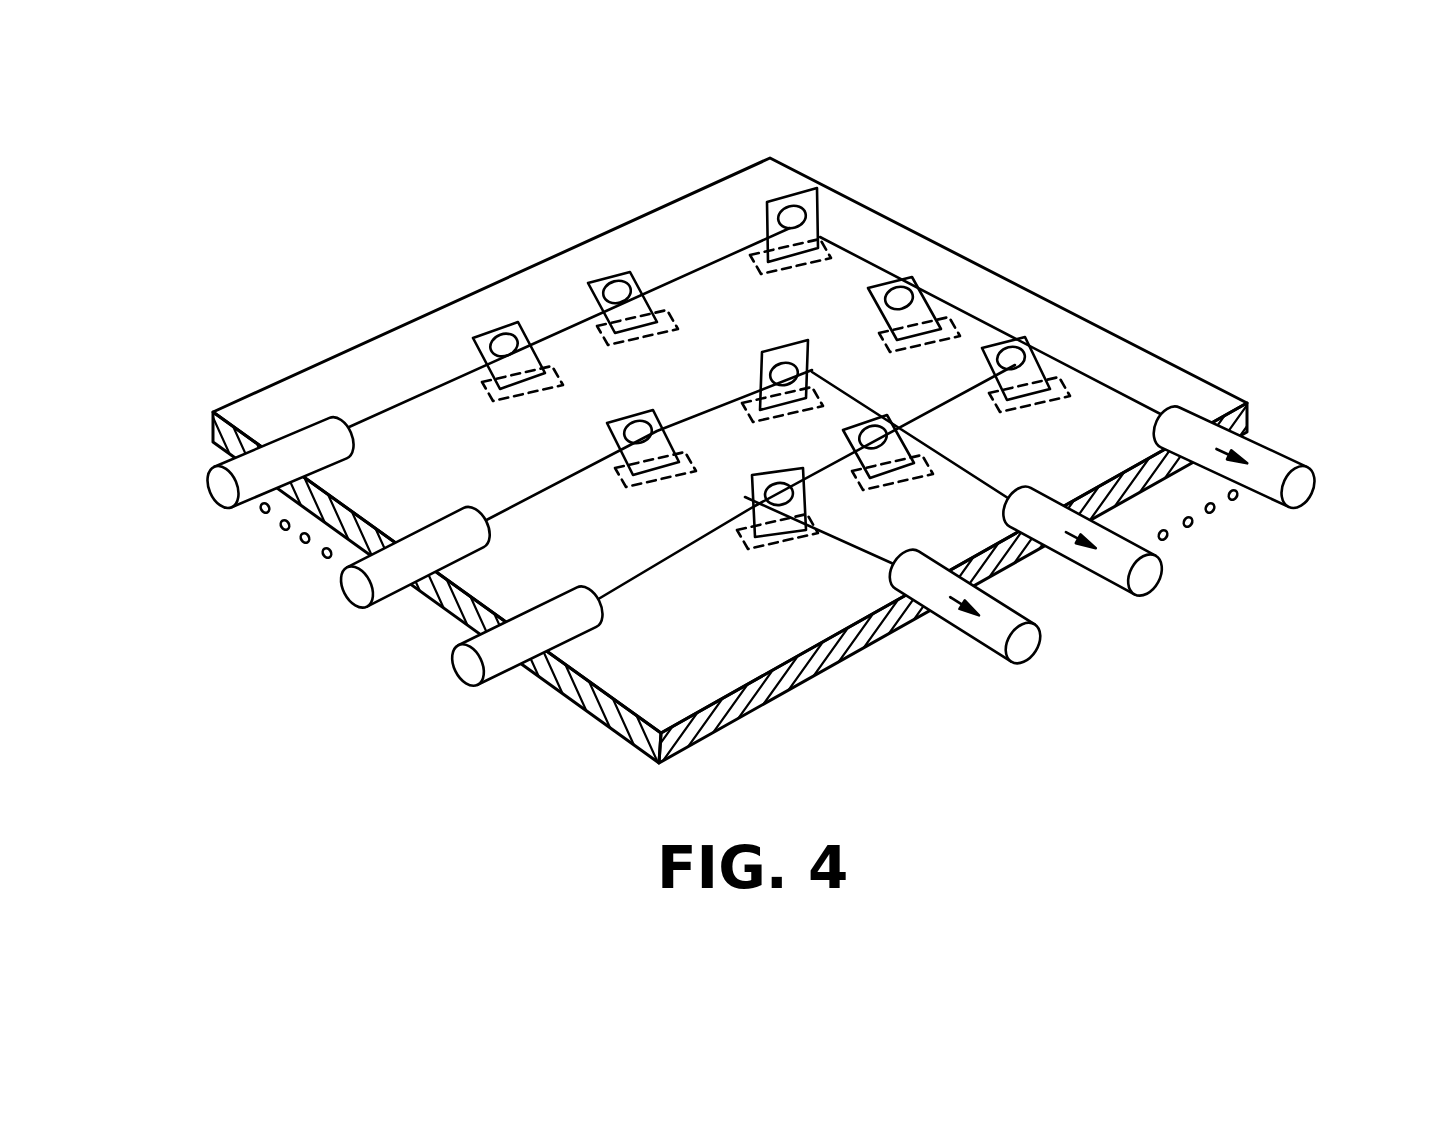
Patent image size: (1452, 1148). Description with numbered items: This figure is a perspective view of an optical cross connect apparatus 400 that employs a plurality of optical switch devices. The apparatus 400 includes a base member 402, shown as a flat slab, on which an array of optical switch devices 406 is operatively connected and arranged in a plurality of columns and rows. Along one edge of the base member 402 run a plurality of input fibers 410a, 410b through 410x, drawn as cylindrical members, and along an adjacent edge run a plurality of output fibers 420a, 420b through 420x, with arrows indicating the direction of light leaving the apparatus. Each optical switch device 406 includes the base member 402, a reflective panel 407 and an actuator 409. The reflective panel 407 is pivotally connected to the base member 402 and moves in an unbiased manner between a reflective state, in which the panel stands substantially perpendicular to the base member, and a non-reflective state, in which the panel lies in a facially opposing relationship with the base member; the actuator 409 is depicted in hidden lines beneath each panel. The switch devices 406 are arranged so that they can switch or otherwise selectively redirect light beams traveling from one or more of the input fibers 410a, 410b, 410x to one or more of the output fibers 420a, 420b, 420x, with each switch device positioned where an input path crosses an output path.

The optical cross connect apparatus 400 is at (987, 236).
The base member 402 is at (1165, 372).
The optical switch device 406 is at (828, 193).
The reflective panel 407 is at (617, 283).
The actuator 409 is at (832, 250).
The input fiber 410x is at (225, 488).
The input fiber 410b is at (355, 586).
The input fiber 410a is at (468, 668).
The output fiber 420x is at (1300, 487).
The output fiber 420b is at (1148, 578).
The output fiber 420a is at (1025, 645).